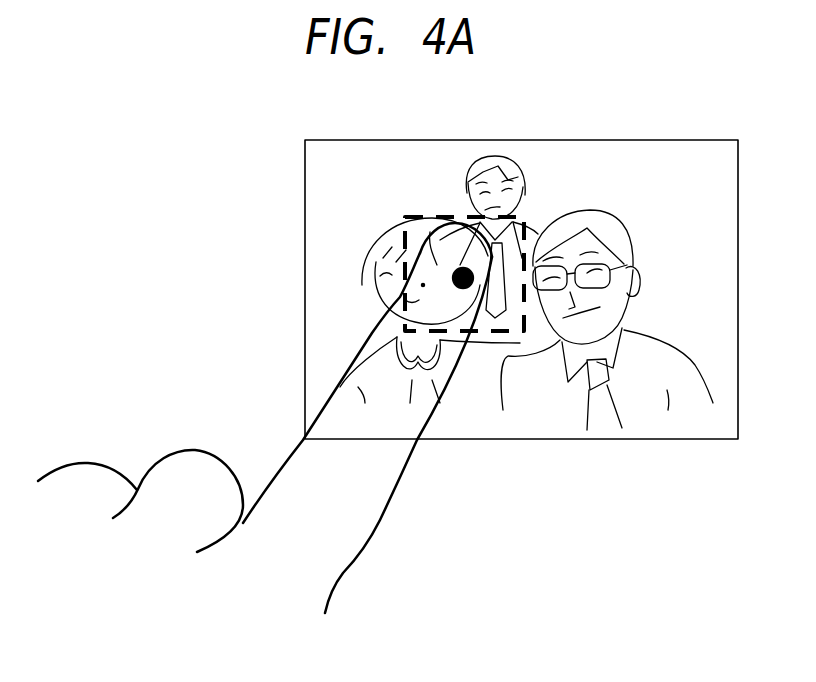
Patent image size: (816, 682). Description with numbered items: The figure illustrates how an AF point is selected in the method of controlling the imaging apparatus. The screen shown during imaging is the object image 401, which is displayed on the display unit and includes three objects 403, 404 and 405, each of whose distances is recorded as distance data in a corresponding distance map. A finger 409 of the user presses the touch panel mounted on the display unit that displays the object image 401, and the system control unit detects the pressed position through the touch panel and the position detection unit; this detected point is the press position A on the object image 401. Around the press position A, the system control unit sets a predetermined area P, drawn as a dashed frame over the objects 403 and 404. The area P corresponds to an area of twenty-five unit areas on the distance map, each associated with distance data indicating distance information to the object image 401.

The object image 401 is at (358, 140).
The object 403 is at (373, 238).
The object 404 is at (530, 173).
The object 405 is at (623, 221).
The predetermined area P is at (449, 212).
The press position A is at (453, 280).
The finger 409 is at (193, 449).